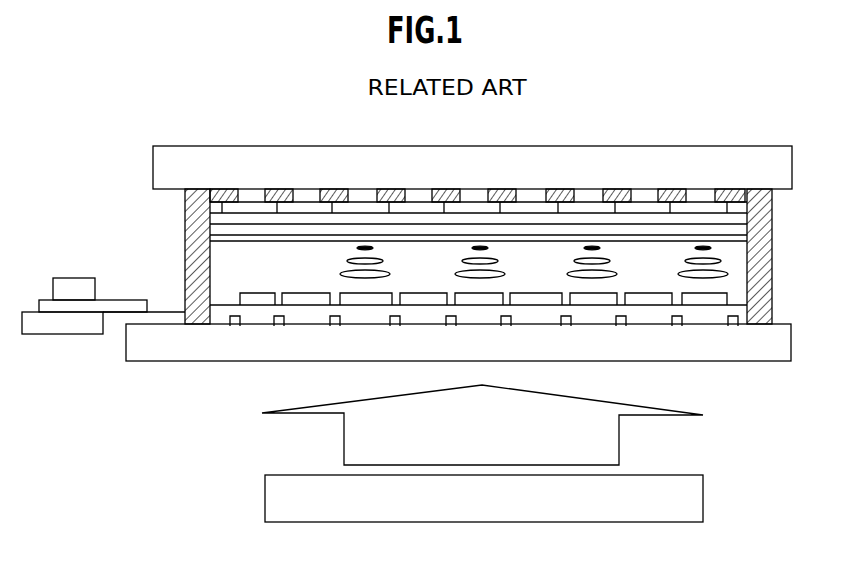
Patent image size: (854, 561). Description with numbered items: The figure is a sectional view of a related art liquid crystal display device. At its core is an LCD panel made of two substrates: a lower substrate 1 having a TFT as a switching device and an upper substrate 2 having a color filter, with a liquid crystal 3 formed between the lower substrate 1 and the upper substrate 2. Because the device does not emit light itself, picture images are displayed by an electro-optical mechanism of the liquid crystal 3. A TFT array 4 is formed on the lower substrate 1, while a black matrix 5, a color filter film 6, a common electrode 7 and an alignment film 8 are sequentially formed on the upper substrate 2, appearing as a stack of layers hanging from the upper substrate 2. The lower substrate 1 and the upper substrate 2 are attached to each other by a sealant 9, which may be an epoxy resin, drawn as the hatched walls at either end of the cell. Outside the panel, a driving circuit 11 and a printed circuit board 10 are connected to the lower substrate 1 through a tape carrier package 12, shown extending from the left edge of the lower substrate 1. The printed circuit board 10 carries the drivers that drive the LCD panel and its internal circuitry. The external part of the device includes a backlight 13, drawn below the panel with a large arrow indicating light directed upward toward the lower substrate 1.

The lower substrate 1 is at (791, 345).
The upper substrate 2 is at (787, 172).
The liquid crystal 3 is at (727, 275).
The TFT array 4 is at (738, 321).
The black matrix 5 is at (744, 199).
The color filter film 6 is at (720, 209).
The common electrode 7 is at (217, 216).
The alignment film 8 is at (215, 232).
The sealant 9 is at (187, 268).
The printed circuit board 10 is at (63, 323).
The driving circuit 11 is at (73, 290).
The tape carrier package 12 is at (117, 308).
The backlight 13 is at (695, 503).